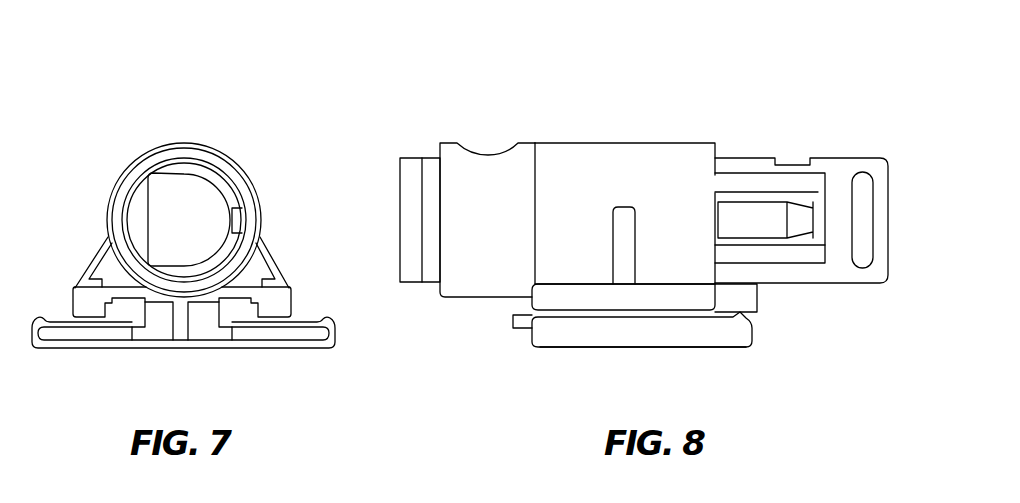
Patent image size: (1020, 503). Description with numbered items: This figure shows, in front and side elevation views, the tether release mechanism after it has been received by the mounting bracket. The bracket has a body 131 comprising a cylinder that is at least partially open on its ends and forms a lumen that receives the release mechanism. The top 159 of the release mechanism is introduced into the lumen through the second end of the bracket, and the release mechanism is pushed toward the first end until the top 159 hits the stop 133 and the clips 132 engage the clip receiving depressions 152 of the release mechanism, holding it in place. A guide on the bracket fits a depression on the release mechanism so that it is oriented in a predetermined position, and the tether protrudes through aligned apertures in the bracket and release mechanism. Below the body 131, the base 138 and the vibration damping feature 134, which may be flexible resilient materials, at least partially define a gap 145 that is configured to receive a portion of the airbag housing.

In FIG. 7, the body 131 is at (130, 163).
In FIG. 8, the body 131 is at (597, 163).
In FIG. 8, the clips 132 is at (822, 255).
In FIG. 7, the stop 133 is at (104, 216).
In FIG. 8, the stop 133 is at (410, 157).
In FIG. 7, the vibration damping feature 134 is at (263, 343).
In FIG. 8, the vibration damping feature 134 is at (707, 342).
In FIG. 7, the base 138 is at (273, 297).
In FIG. 8, the base 138 is at (703, 297).
In FIG. 7, the gap 145 is at (280, 330).
In FIG. 8, the gap 145 is at (555, 318).
In FIG. 8, the clip receiving depression 152 is at (797, 221).
In FIG. 7, the top 159 is at (198, 202).
In FIG. 8, the top 159 is at (432, 150).